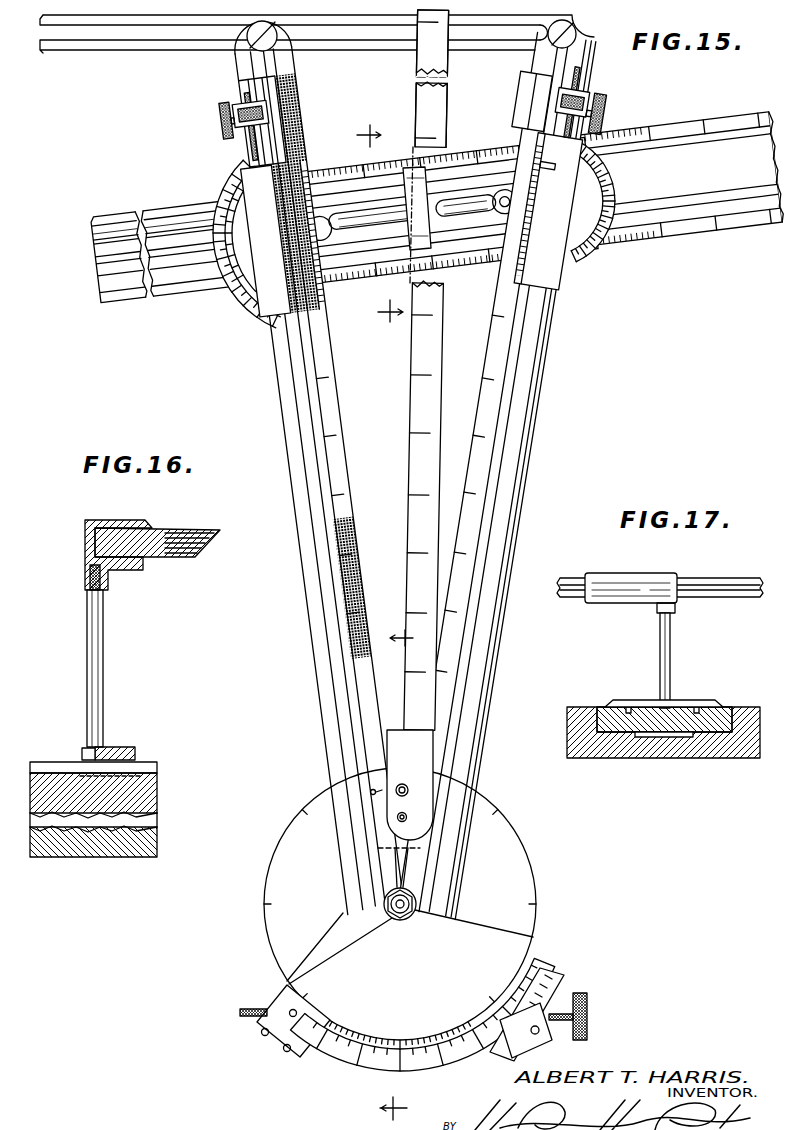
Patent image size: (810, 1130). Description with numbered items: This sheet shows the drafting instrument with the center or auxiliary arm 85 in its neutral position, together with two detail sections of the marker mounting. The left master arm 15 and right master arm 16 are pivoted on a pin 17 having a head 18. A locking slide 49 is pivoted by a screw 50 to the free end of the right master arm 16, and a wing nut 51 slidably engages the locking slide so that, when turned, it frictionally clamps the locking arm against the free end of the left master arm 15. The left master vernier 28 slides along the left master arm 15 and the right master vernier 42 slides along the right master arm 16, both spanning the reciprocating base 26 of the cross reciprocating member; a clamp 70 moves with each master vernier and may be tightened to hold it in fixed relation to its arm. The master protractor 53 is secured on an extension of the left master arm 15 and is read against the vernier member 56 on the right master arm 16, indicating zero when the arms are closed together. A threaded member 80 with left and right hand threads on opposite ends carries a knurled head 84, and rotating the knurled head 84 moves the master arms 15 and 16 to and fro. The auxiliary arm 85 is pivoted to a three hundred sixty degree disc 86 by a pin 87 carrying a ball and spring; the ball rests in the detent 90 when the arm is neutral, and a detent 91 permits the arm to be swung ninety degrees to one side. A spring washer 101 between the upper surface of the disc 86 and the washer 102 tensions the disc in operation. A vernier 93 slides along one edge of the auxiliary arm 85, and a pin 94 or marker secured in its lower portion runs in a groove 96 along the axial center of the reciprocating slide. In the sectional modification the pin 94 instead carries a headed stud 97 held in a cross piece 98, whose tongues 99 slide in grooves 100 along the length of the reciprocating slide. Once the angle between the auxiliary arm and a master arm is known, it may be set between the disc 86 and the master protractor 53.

In FIG. 15, the left master arm 15 is at (297, 490).
In FIG. 15, the right master arm 16 is at (515, 498).
In FIG. 15, the pin 17 is at (437, 904).
In FIG. 15, the head 18 is at (405, 868).
In FIG. 15, the reciprocating base 26 is at (663, 125).
In FIG. 15, the left master vernier 28 is at (264, 305).
In FIG. 15, the right master vernier 42 is at (548, 277).
In FIG. 15, the locking slide 49 is at (124, 47).
In FIG. 15, the screw 50 is at (578, 35).
In FIG. 15, the wing nut 51 is at (243, 43).
In FIG. 15, the master protractor 53 is at (337, 1058).
In FIG. 15, the vernier member 56 is at (563, 977).
In FIG. 15, the clamp 70 is at (267, 102).
In FIG. 15, the threaded member 80 is at (560, 1007).
In FIG. 15, the knurled head 84 is at (587, 1003).
In FIG. 15, the auxiliary arm 85 is at (412, 408).
In FIG. 16, the auxiliary arm 85 is at (198, 530).
In FIG. 17, the auxiliary arm 85 is at (728, 578).
In FIG. 15, the disc 86 is at (517, 825).
In FIG. 15, the pin 87 is at (410, 785).
In FIG. 15, the detent 90 is at (408, 820).
In FIG. 15, the detent 91 is at (370, 792).
In FIG. 16, the vernier 93 is at (113, 520).
In FIG. 17, the vernier 93 is at (653, 573).
In FIG. 16, the pin 94 is at (103, 645).
In FIG. 17, the pin 94 is at (670, 640).
In FIG. 15, the groove 96 is at (112, 258).
In FIG. 16, the headed stud 97 is at (88, 750).
In FIG. 15, the cross piece 98 is at (420, 187).
In FIG. 16, the cross piece 98 is at (128, 747).
In FIG. 17, the cross piece 98 is at (613, 700).
In FIG. 16, the tongues 99 is at (135, 765).
In FIG. 17, the tongues 99 is at (628, 707).
In FIG. 15, the grooves 100 is at (188, 222).
In FIG. 17, the grooves 100 is at (718, 705).
In FIG. 16, the spring washer 101 is at (157, 775).
In FIG. 15, the washer 102 is at (398, 921).